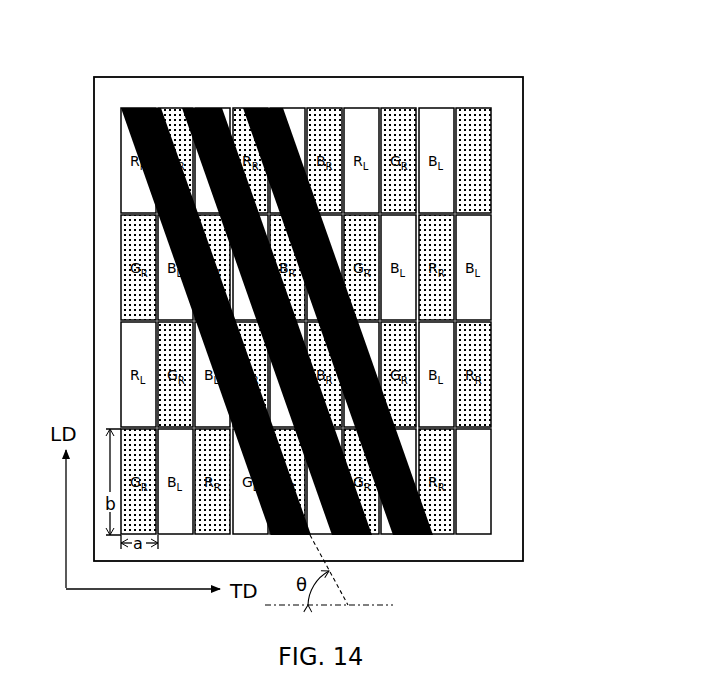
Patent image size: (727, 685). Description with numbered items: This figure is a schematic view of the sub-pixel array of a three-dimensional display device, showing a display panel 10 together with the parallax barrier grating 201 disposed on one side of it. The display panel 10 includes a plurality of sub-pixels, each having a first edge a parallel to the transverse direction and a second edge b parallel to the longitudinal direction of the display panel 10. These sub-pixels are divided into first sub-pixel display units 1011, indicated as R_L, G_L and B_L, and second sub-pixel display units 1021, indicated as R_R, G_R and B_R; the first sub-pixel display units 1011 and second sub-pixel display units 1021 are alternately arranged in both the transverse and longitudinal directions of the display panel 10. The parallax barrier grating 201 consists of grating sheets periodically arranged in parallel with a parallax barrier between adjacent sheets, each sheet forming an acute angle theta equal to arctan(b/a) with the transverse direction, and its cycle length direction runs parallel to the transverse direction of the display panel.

The display panel 10 is at (500, 302).
The parallax barrier grating 201 is at (258, 100).
The second sub-pixel display unit 1021 is at (472, 140).
The first sub-pixel display unit 1011 is at (485, 492).